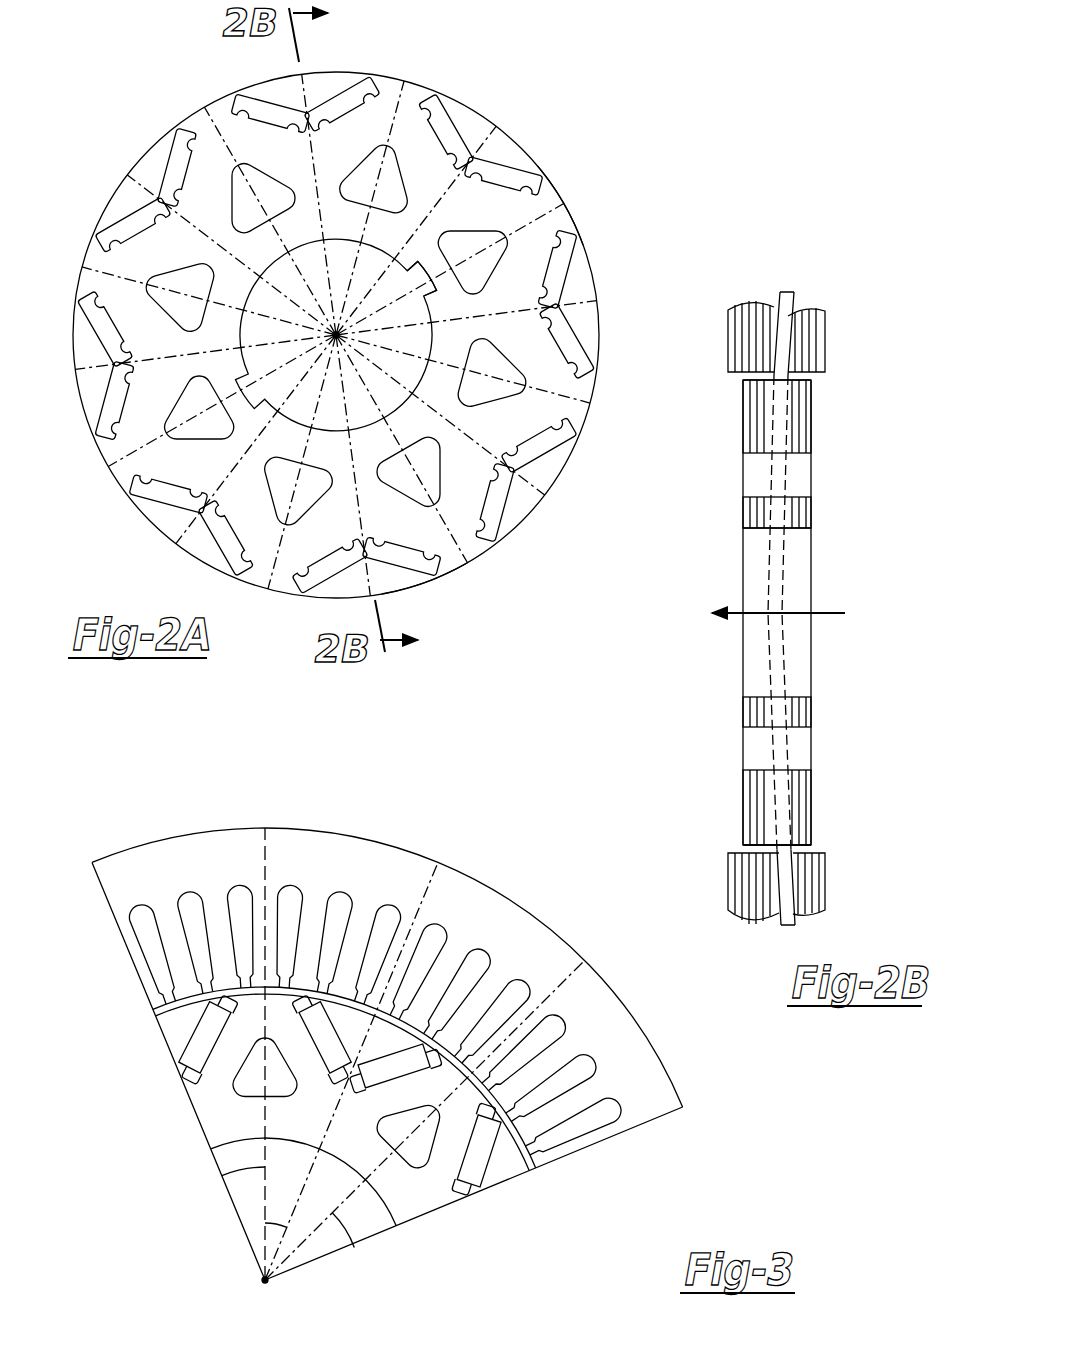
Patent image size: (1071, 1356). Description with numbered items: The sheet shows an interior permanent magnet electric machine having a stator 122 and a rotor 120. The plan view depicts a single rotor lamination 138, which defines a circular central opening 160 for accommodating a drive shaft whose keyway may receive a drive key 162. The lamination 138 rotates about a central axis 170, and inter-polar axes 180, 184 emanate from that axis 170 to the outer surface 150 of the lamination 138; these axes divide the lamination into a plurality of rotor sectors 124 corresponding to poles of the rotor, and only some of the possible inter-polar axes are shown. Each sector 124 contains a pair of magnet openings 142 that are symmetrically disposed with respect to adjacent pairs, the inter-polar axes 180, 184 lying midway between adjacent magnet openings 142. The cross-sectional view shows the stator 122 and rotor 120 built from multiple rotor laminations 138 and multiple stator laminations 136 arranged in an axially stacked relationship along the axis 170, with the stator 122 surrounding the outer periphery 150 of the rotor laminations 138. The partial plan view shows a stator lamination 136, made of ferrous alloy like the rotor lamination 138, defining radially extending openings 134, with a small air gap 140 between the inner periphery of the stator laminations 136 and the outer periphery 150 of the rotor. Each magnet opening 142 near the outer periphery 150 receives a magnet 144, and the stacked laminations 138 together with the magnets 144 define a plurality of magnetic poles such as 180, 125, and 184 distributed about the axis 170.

In FIG. 2B, the rotor 120 is at (814, 421).
In FIG. 2B, the stator 122 is at (828, 339).
In FIG. 2A, the rotor sectors 124 is at (334, 204).
In FIG. 3, the rotor sectors 124 is at (346, 1105).
In FIG. 2A, the magnetic pole 125 is at (510, 108).
In FIG. 3, the magnetic pole 125 is at (235, 1230).
In FIG. 3, the radially extending openings 134 is at (228, 903).
In FIG. 2B, the stator laminations 136 is at (752, 900).
In FIG. 3, the stator laminations 136 is at (680, 1077).
In FIG. 2A, the rotor lamination 138 is at (228, 125).
In FIG. 2B, the rotor lamination 138 is at (765, 429).
In FIG. 3, the rotor lamination 138 is at (408, 1194).
In FIG. 3, the air gap 140 is at (156, 1011).
In FIG. 2A, the magnet openings 142 is at (350, 92).
In FIG. 3, the magnet openings 142 is at (378, 1092).
In FIG. 3, the magnet 144 is at (190, 1040).
In FIG. 2A, the outer surface 150 is at (418, 590).
In FIG. 2B, the outer surface 150 is at (806, 848).
In FIG. 2A, the circular central opening 160 is at (272, 268).
In FIG. 2B, the circular central opening 160 is at (757, 529).
In FIG. 2A, the drive key 162 is at (420, 300).
In FIG. 2A, the central axis 170 is at (333, 335).
In FIG. 2B, the central axis 170 is at (823, 612).
In FIG. 3, the central axis 170 is at (262, 1280).
In FIG. 2A, the inter-polar axis 180 is at (565, 190).
In FIG. 3, the inter-polar axis 180 is at (353, 1250).
In FIG. 2A, the inter-polar axis 184 is at (403, 68).
In FIG. 3, the inter-polar axis 184 is at (215, 1180).